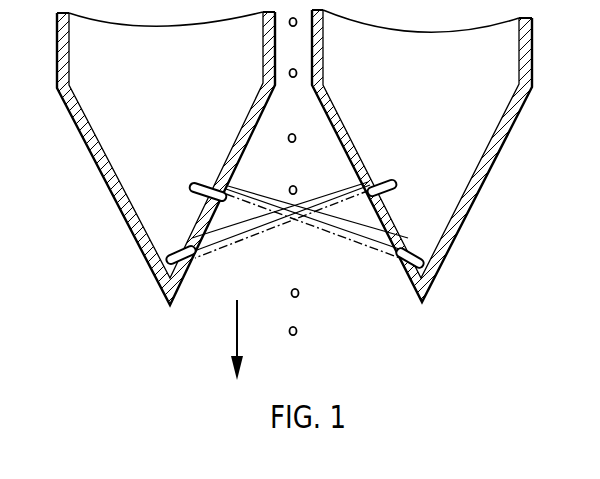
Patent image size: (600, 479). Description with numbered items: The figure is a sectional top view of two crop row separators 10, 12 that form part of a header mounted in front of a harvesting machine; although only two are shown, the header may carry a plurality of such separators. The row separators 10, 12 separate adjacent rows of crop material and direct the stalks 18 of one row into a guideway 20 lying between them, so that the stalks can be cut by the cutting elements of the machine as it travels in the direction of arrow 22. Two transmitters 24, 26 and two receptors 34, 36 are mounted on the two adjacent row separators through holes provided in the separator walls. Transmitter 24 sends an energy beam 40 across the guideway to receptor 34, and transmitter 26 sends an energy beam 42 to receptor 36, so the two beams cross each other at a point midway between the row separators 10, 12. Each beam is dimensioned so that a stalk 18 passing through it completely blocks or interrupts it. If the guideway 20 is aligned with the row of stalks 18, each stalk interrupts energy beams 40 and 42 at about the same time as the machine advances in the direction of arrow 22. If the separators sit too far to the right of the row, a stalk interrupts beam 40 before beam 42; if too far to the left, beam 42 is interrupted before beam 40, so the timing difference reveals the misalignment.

The crop row separator 10 is at (179, 122).
The crop row separator 12 is at (437, 122).
The stalks 18 is at (295, 143).
The guideway 20 is at (293, 47).
The arrow 22 is at (236, 326).
The transmitter 24 is at (206, 184).
The transmitter 26 is at (394, 182).
The receptor 34 is at (420, 253).
The receptor 36 is at (181, 249).
The energy beam 40 is at (327, 240).
The energy beam 42 is at (260, 243).